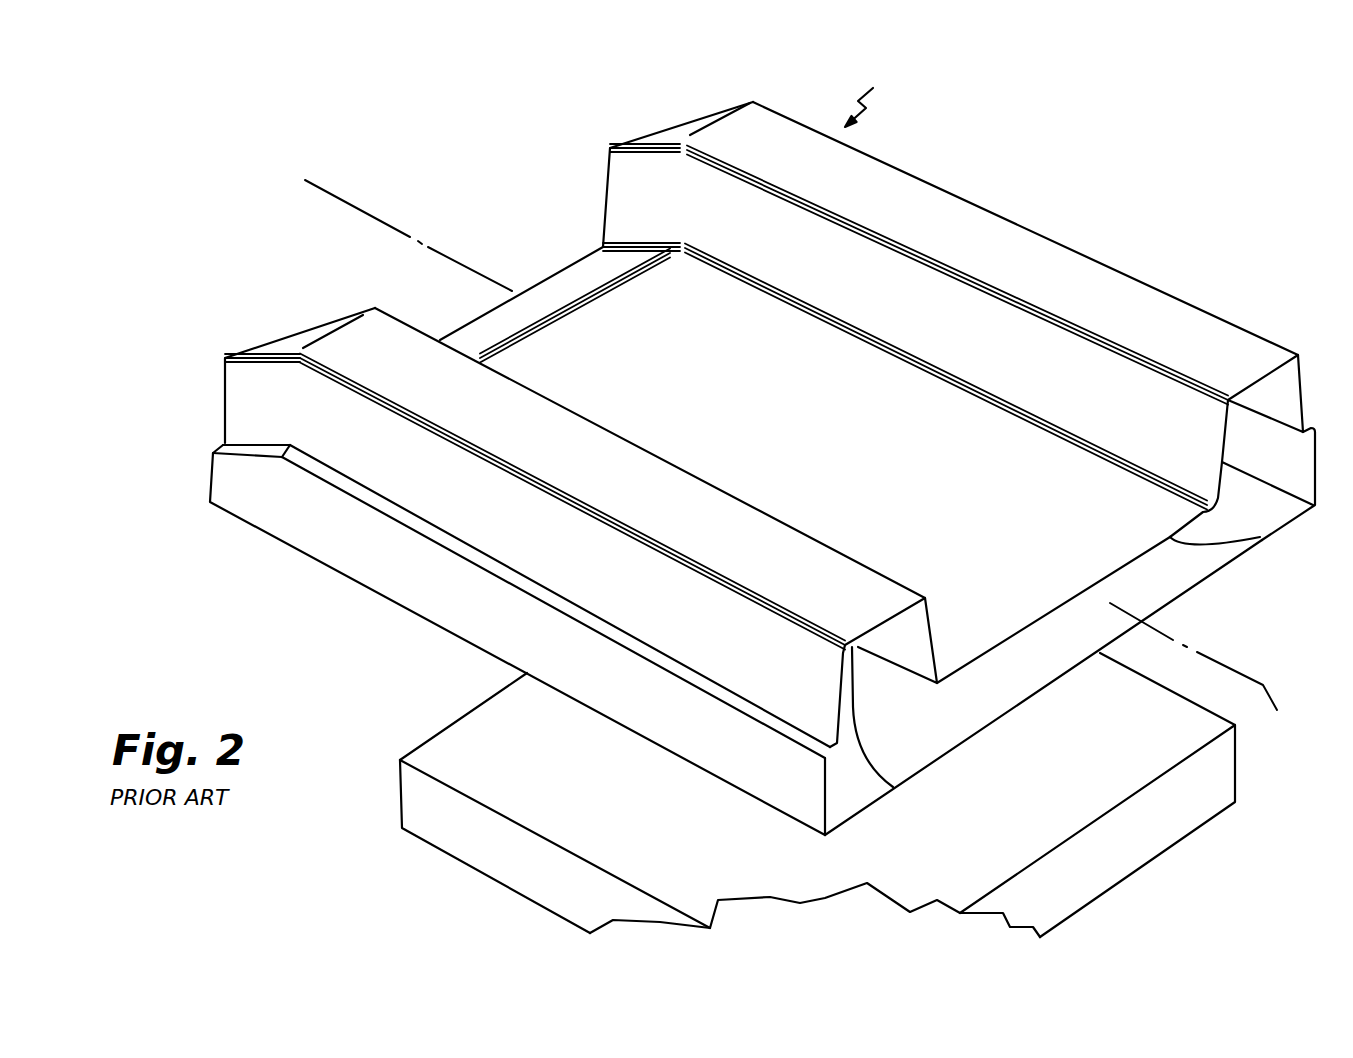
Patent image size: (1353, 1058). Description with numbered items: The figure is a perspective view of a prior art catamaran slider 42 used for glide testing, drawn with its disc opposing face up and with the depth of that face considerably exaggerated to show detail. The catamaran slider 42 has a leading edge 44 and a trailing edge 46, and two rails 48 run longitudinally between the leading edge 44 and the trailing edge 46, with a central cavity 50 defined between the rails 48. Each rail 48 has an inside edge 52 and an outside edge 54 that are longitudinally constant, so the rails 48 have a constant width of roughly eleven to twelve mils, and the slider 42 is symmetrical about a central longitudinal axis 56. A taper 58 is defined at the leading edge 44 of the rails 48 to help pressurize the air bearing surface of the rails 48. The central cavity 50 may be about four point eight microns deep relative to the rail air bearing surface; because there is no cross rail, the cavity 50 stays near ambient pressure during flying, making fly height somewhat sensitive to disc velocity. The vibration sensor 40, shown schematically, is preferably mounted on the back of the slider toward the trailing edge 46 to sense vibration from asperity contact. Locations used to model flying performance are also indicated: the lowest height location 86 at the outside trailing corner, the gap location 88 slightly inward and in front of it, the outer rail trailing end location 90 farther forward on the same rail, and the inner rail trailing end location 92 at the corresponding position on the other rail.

The vibration sensor 40 is at (1148, 752).
The catamaran slider 42 is at (881, 95).
The leading edge 44 is at (557, 268).
The trailing edge 46 is at (1260, 537).
The rails 48 is at (1067, 277).
The central cavity 50 is at (808, 352).
The inside edge 52 is at (827, 213).
The outside edge 54 is at (1033, 227).
The central longitudinal axis 56 is at (1223, 663).
The taper 58 is at (680, 115).
The lowest height location 86 is at (893, 787).
The gap location 88 is at (880, 613).
The outer rail trailing end location 90 is at (870, 607).
The inner rail trailing end location 92 is at (1242, 355).